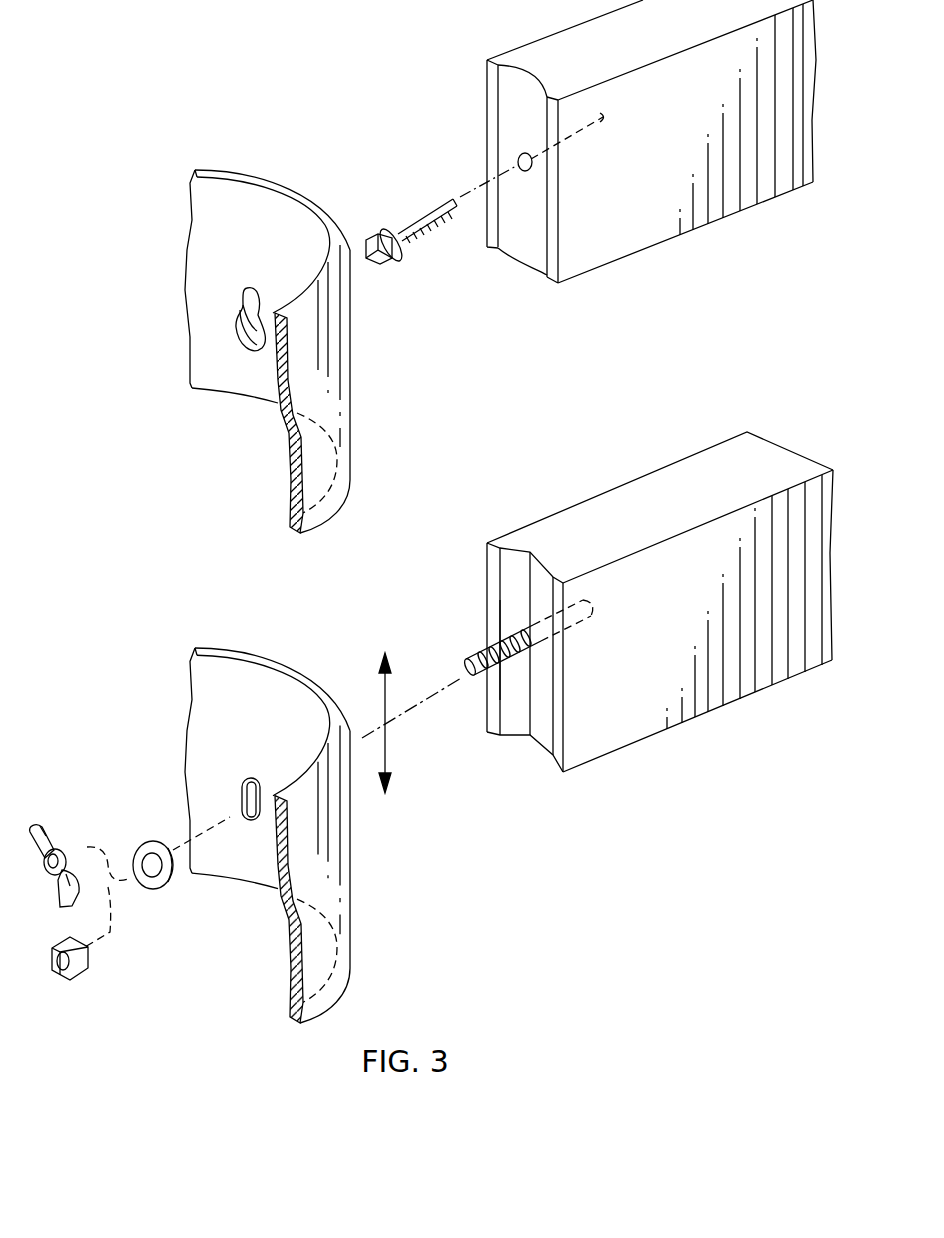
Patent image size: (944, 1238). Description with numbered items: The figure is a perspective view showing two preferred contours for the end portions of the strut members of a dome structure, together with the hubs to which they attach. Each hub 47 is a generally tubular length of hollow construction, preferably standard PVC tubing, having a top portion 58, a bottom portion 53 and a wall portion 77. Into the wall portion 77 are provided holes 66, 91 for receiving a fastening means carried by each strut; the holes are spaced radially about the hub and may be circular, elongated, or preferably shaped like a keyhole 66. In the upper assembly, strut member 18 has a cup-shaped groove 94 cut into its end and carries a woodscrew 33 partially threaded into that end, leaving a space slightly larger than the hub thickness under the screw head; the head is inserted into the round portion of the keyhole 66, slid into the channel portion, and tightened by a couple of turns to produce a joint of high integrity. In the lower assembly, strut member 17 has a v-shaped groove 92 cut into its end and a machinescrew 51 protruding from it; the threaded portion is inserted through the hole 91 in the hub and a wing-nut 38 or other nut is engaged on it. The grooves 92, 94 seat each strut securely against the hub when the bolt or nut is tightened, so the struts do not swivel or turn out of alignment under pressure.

The strut member 17 is at (720, 710).
The strut member 18 is at (647, 252).
The woodscrew 33 is at (403, 257).
The wing-nut 38 is at (56, 827).
The hub 47 is at (243, 203).
The machinescrew 51 is at (480, 655).
The bottom portion 53 is at (348, 975).
The top portion 58 is at (303, 188).
The keyhole 66 is at (238, 328).
The wall portion 77 is at (350, 357).
The hole 91 is at (242, 778).
The v-shaped groove 92 is at (515, 707).
The cup-shaped groove 94 is at (518, 118).